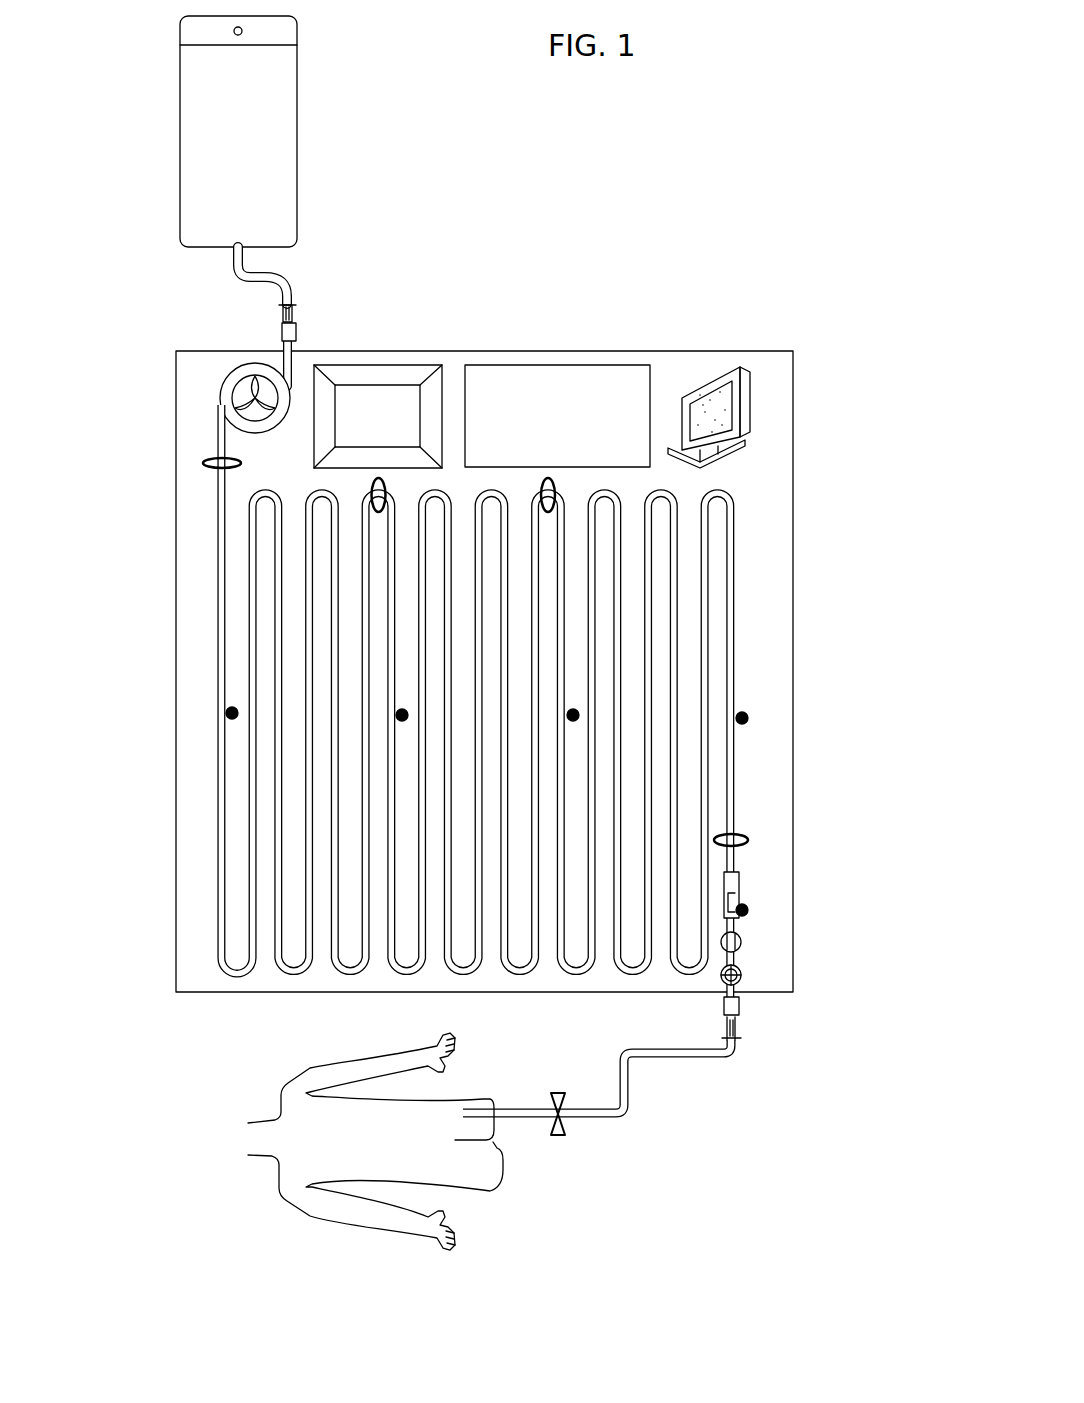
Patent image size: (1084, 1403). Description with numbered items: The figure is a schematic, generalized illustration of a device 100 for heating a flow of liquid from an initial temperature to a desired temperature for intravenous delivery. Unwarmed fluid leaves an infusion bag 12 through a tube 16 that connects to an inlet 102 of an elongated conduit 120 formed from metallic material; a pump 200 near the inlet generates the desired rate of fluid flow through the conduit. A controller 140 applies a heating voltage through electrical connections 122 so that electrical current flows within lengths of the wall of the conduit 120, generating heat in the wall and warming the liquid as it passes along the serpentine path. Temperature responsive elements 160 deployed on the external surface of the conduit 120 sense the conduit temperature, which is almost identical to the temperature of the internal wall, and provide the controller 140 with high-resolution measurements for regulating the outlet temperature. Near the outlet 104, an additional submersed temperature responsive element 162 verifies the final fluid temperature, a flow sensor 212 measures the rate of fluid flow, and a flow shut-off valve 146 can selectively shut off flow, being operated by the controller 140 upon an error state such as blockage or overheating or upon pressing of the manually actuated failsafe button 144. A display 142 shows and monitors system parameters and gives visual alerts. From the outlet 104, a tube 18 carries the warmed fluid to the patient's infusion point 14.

The infusion bag 12 is at (299, 138).
The tube 16 is at (270, 280).
The inlet 102 is at (297, 332).
The device 100 is at (717, 271).
The pump 200 is at (220, 397).
The failsafe button 144 is at (418, 372).
The controller 140 is at (577, 373).
The display 142 is at (720, 363).
The elongated conduit 120 is at (219, 604).
The electrical connection 122 is at (202, 465).
The temperature responsive element 160 is at (228, 713).
The temperature responsive element 162 is at (741, 893).
The flow sensor 212 is at (743, 940).
The flow shut-off valve 146 is at (743, 972).
The outlet 104 is at (740, 1003).
The tube 18 is at (688, 1058).
The infusion point 14 is at (500, 1150).